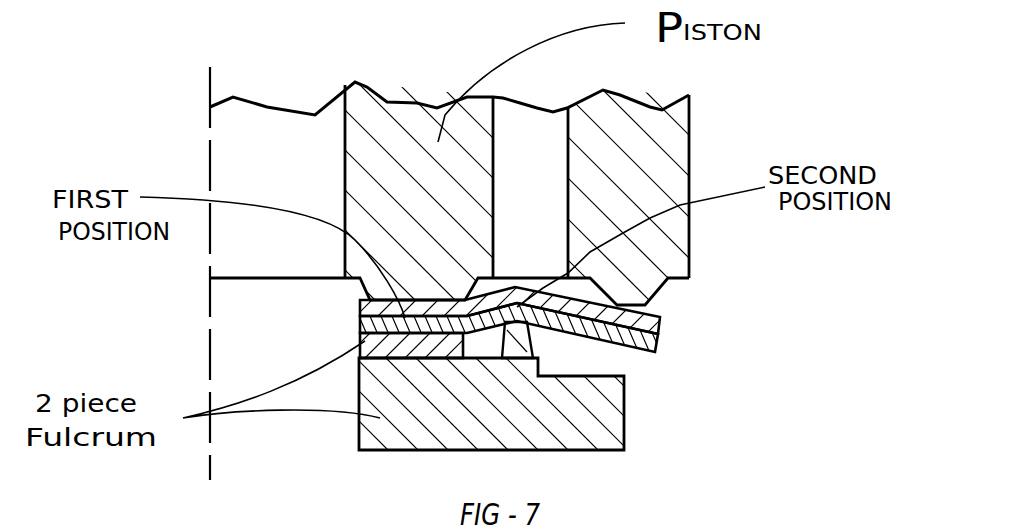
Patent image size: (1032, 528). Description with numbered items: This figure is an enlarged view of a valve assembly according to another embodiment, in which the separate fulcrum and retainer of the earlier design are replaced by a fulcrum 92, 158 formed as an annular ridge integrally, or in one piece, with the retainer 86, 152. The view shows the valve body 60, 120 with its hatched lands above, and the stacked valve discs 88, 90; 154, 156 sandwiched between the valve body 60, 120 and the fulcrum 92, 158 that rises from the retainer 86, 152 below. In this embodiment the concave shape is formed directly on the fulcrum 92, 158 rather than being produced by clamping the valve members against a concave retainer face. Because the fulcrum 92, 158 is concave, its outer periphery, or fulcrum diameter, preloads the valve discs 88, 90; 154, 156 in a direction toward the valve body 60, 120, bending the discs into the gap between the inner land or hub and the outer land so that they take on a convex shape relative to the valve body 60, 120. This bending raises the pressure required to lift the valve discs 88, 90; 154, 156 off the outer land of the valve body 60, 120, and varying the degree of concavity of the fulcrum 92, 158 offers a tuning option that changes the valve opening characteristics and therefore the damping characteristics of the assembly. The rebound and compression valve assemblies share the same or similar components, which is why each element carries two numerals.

The valve body 60 is at (530, 195).
The valve body 120 is at (668, 166).
The valve disc 90 is at (548, 312).
The valve disc 156 is at (662, 326).
The valve disc 88 is at (561, 330).
The valve disc 154 is at (660, 350).
The fulcrum 92 is at (641, 358).
The fulcrum 158 is at (518, 354).
The retainer 86 is at (511, 405).
The retainer 152 is at (612, 418).